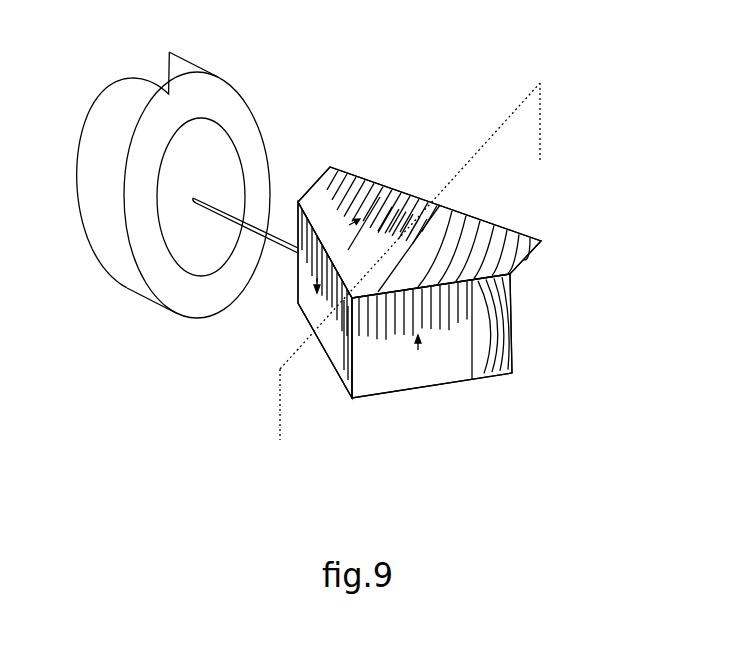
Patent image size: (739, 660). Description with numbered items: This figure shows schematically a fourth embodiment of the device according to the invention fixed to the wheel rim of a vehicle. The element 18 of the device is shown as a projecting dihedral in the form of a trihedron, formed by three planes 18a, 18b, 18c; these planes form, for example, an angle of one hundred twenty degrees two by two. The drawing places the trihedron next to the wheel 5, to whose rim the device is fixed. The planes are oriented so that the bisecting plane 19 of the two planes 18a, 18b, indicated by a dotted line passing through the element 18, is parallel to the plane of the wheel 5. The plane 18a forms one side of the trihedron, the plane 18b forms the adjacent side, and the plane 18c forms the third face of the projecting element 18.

The wheel 5 is at (123, 92).
The element 18 is at (564, 247).
The plane 18a is at (305, 308).
The plane 18b is at (418, 351).
The plane 18c is at (375, 228).
The bisecting plane 19 is at (514, 110).